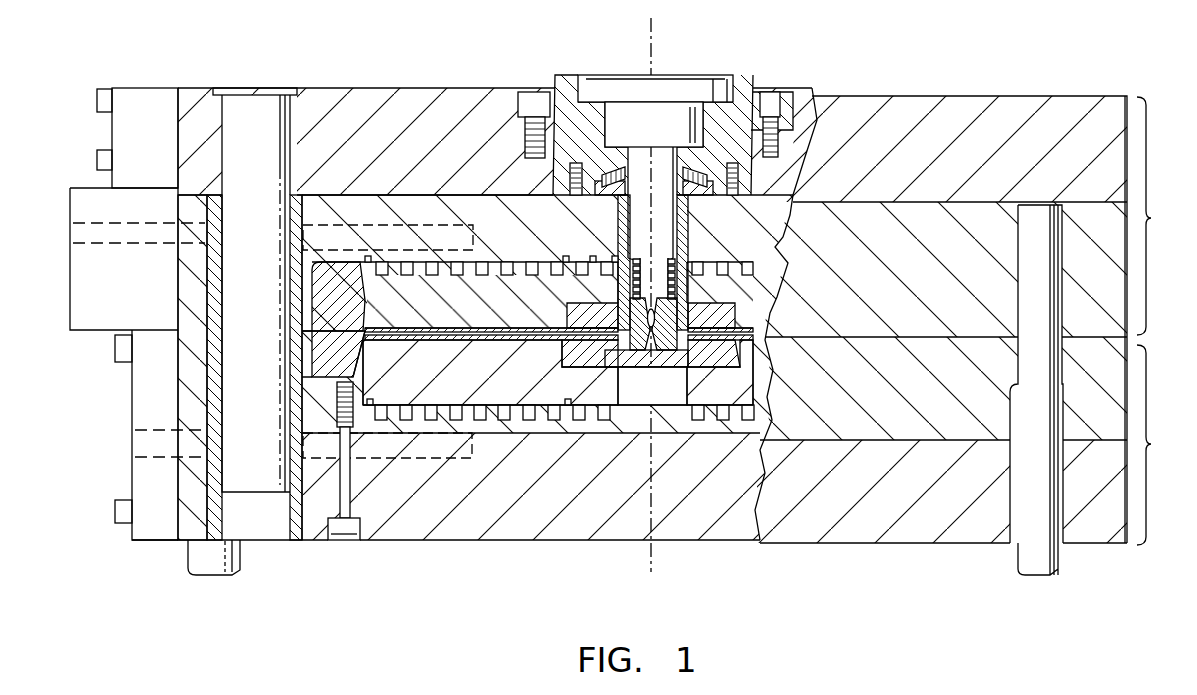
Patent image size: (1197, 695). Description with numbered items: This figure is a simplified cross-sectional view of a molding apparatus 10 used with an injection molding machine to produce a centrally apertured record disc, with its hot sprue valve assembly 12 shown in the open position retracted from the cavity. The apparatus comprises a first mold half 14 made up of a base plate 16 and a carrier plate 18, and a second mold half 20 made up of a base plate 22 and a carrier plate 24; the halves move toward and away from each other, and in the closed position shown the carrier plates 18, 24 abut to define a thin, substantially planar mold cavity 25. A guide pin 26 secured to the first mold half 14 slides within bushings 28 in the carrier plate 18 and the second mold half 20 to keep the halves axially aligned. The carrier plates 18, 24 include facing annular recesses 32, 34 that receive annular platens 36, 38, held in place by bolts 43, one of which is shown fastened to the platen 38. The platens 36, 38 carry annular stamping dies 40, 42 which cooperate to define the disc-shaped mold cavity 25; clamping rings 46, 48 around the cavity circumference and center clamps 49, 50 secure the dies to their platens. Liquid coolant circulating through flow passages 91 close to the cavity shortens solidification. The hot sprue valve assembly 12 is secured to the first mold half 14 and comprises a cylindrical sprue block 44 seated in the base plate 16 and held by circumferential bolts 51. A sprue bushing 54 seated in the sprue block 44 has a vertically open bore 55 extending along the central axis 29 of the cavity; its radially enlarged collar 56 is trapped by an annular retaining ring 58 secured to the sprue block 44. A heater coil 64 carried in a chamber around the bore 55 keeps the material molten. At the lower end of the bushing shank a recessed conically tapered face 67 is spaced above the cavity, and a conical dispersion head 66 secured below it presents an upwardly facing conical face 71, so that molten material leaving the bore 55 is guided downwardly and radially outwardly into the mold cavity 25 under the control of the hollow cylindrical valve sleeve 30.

The molding apparatus 10 is at (391, 561).
The hot sprue valve assembly 12 is at (789, 82).
The first mold half 14 is at (1161, 216).
The base plate 16 is at (899, 95).
The carrier plate 18 is at (927, 197).
The second mold half 20 is at (1097, 390).
The base plate 22 is at (909, 535).
The carrier plate 24 is at (898, 426).
The mold cavity 25 is at (459, 338).
The guide pins 26 is at (278, 161).
The bushings 28 is at (210, 268).
The central axis 29 is at (650, 480).
The valve sleeve 30 is at (688, 236).
The annular plate-shaped recess 32 is at (337, 262).
The annular plate-shaped recess 34 is at (500, 393).
The annular platen 36 is at (467, 280).
The annular platen 38 is at (405, 383).
The stamping die 40 is at (398, 325).
The stamping die 42 is at (350, 353).
The bolts 43 is at (352, 507).
The sprue block 44 is at (742, 97).
The annular clamping ring 46 is at (355, 292).
The annular clamping ring 48 is at (320, 362).
The annular center clamp 49 is at (765, 295).
The annular center clamp 50 is at (714, 358).
The bolts 51 is at (537, 92).
The sprue bushing 54 is at (640, 222).
The bore 55 is at (650, 253).
The collar 56 is at (628, 112).
The retaining ring 58 is at (592, 86).
The heater coil 64 is at (683, 260).
The dispersion head 66 is at (657, 343).
The tapered face 67 is at (643, 315).
The conical face 71 is at (685, 339).
The flow passages 91 is at (432, 268).